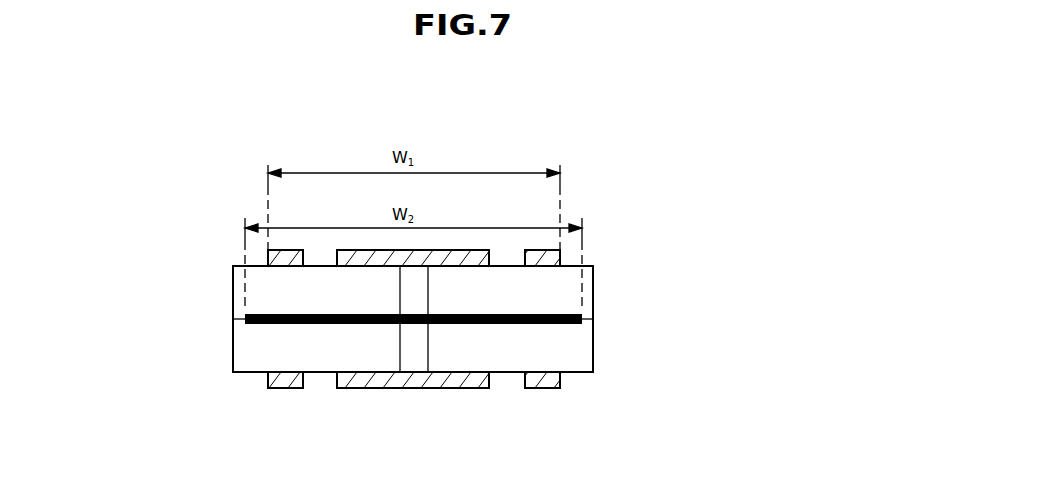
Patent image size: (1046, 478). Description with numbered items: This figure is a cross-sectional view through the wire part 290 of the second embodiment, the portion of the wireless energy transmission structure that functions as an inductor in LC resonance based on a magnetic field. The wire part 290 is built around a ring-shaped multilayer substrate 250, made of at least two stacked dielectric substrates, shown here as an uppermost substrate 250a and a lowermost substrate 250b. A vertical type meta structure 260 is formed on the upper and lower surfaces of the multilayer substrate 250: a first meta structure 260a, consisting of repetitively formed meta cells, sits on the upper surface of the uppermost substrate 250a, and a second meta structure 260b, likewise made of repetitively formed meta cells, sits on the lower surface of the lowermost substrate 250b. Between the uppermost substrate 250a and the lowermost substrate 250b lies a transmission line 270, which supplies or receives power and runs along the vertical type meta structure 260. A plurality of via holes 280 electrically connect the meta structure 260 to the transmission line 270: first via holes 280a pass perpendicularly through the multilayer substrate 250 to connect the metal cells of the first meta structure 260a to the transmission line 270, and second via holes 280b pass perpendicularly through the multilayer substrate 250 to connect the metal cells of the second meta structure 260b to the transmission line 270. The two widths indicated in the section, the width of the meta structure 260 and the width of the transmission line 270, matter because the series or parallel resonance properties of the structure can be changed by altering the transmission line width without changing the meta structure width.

The wire part 290 is at (662, 173).
The meta structure 260 is at (790, 235).
The first meta structure 260a is at (571, 252).
The second meta structure 260b is at (571, 381).
The multilayer substrate 250 is at (700, 285).
The uppermost substrate 250a is at (567, 290).
The lowermost substrate 250b is at (577, 345).
The transmission line 270 is at (502, 324).
The via holes 280 is at (137, 290).
The first via holes 280a is at (409, 283).
The second via holes 280b is at (409, 338).